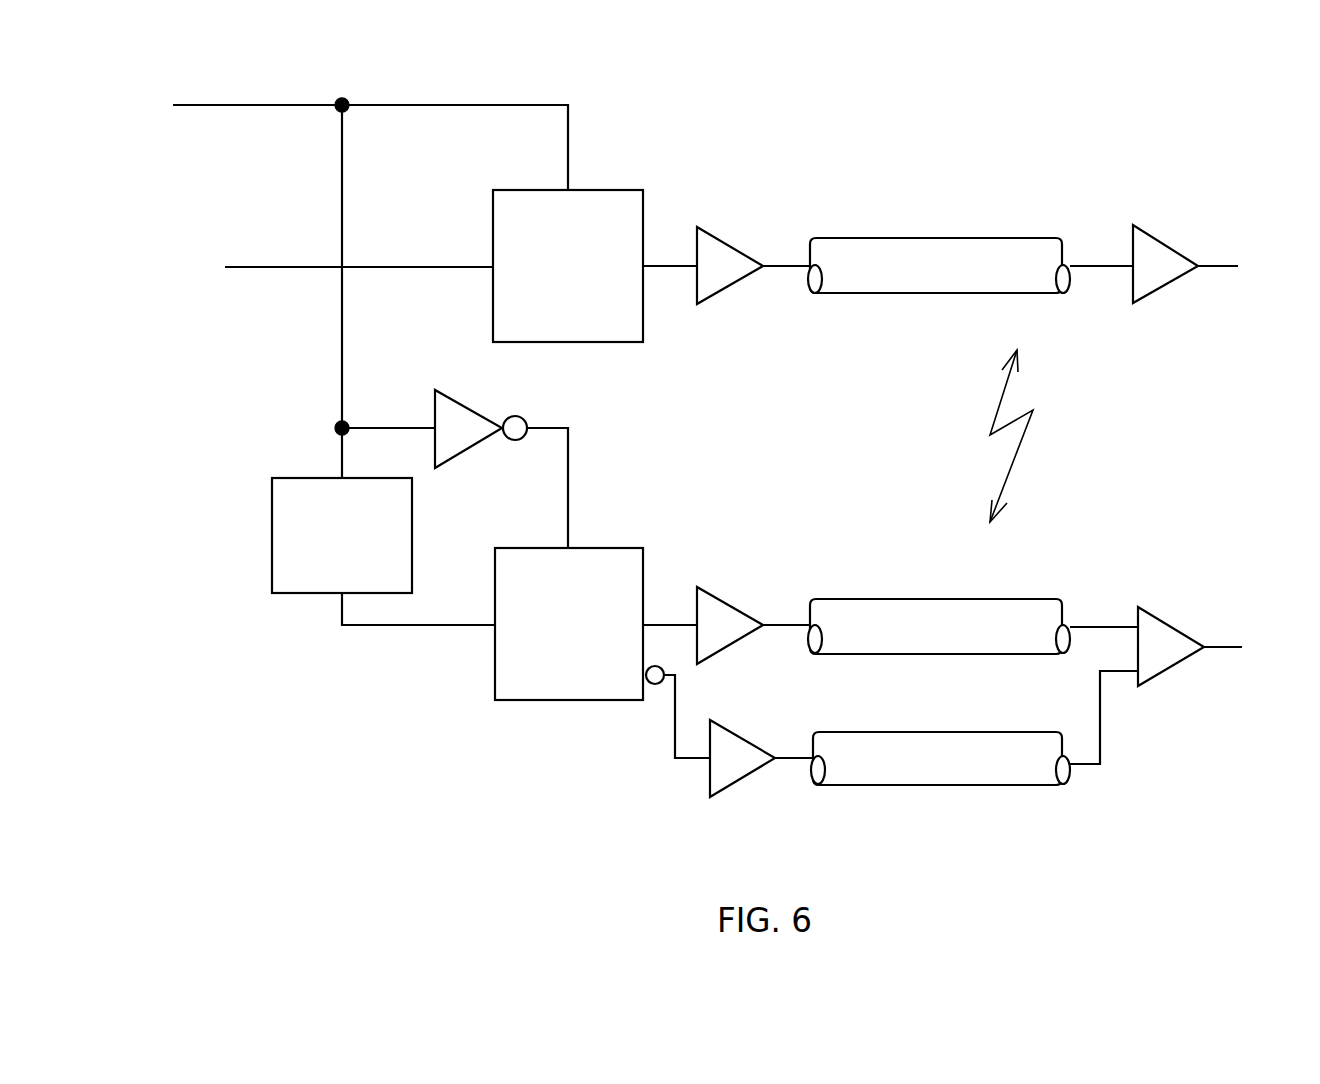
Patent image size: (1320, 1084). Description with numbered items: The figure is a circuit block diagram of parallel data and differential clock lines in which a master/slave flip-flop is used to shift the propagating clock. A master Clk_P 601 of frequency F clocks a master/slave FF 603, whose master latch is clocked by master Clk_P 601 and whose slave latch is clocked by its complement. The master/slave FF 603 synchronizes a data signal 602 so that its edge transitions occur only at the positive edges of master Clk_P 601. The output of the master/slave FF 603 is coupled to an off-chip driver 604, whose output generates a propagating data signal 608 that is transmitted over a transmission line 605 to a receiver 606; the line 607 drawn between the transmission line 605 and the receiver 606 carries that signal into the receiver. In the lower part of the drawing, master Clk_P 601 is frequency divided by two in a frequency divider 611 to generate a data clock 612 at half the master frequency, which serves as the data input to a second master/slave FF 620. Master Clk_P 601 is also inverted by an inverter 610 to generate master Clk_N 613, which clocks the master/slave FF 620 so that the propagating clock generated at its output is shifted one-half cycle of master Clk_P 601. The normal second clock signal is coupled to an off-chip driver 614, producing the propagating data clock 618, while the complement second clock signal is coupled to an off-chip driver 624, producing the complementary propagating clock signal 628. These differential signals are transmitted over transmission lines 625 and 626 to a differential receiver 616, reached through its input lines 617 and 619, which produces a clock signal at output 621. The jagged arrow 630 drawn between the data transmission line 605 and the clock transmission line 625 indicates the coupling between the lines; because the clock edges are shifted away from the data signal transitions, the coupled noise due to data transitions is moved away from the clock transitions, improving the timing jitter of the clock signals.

The master Clk_P 601 is at (397, 105).
The data signal 602 is at (255, 268).
The master/slave FF 603 is at (585, 190).
The off-chip driver 604 is at (720, 275).
The transmission line 605 is at (910, 293).
The receiver 606 is at (1152, 232).
The receiver input line 607 is at (1097, 273).
The propagating data signal 608 is at (773, 268).
The inverter 610 is at (467, 417).
The frequency divider 611 is at (413, 542).
The data clock 612 is at (385, 625).
The master Clk_N 613 is at (568, 472).
The off-chip driver 614 is at (722, 650).
The differential receiver 616 is at (1169, 611).
The receiver input line 617 is at (1089, 622).
The propagating data clock 618 is at (768, 630).
The receiver complementary input line 619 is at (1100, 687).
The master/slave FF 620 is at (587, 682).
The output 621 is at (1216, 644).
The off-chip driver 624 is at (708, 785).
The transmission line 625 is at (912, 599).
The transmission line 626 is at (952, 730).
The propagating clock signal 628 is at (777, 760).
The coupling / crosstalk indicator 630 is at (1037, 440).